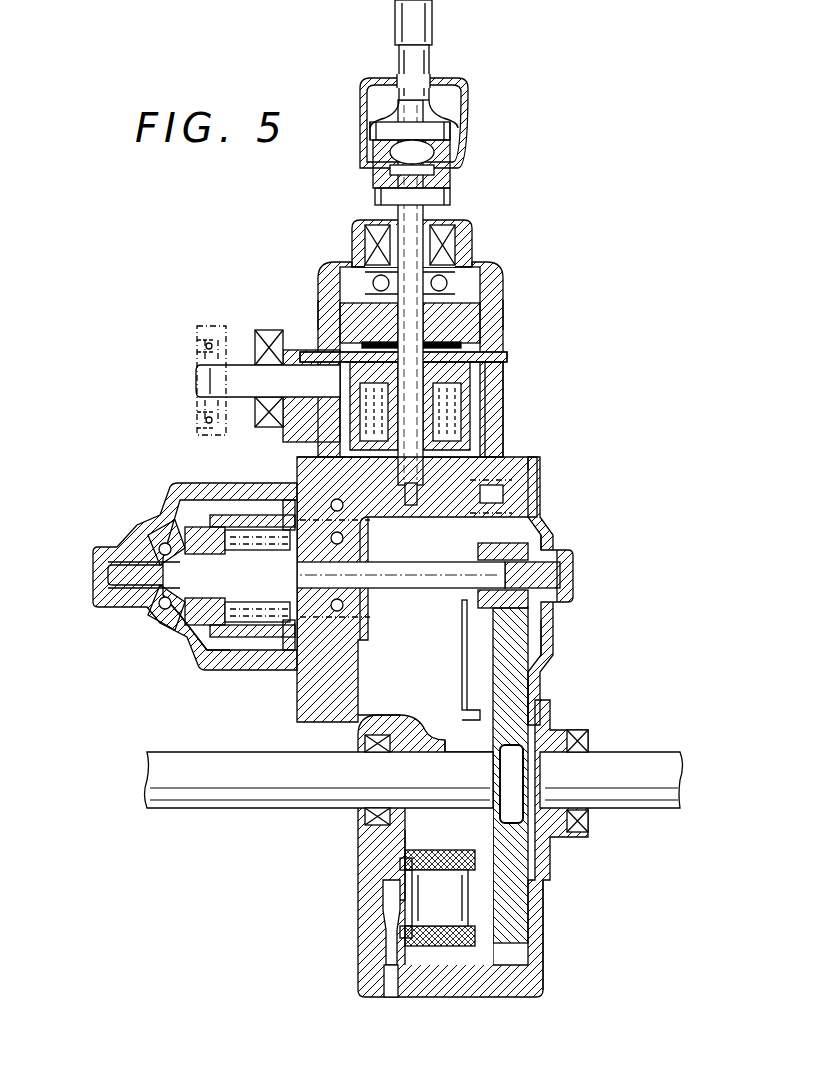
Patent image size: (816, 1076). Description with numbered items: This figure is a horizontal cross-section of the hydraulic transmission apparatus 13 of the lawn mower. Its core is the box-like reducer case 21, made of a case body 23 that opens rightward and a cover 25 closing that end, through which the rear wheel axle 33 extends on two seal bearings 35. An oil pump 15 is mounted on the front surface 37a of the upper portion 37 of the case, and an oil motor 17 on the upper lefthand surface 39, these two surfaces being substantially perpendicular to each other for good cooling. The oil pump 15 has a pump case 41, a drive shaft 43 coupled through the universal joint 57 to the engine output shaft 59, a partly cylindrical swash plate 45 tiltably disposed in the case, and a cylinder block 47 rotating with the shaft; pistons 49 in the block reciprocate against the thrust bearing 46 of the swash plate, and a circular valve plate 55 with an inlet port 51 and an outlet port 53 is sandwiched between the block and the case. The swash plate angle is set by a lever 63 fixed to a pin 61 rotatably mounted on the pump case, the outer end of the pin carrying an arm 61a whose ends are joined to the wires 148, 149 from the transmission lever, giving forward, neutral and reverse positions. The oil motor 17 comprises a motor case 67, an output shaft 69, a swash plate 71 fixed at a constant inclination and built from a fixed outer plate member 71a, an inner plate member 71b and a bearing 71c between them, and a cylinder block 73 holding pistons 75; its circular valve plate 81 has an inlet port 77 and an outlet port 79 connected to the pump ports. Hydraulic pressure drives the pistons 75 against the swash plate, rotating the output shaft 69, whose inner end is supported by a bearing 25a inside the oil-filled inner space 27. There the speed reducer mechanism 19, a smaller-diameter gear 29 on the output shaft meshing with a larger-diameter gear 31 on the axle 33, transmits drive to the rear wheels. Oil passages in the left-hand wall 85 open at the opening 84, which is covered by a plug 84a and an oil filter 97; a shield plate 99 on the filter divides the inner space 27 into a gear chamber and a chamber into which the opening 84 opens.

The hydraulic transmission apparatus 13 is at (515, 280).
The oil pump 15 is at (506, 346).
The oil motor 17 is at (150, 627).
The speed reducer mechanism 19 is at (518, 670).
The reducer case 21 is at (370, 873).
The case body 23 is at (397, 843).
The cover 25 is at (540, 938).
The bearing 25a is at (553, 552).
The inner space 27 is at (342, 641).
The smaller-diameter gear 29 is at (542, 530).
The larger-diameter gear 31 is at (517, 642).
The axle 33 is at (197, 793).
The seal bearings 35 is at (367, 822).
The upper portion 37 is at (540, 455).
The front surface 37a is at (535, 468).
The upper lefthand surface 39 is at (296, 470).
The pump case 41 is at (504, 320).
The drive shaft 43 is at (415, 223).
The swash plate 45 is at (487, 310).
The thrust bearing 46 is at (473, 346).
The cylinder block 47 is at (473, 393).
The pistons 49 is at (330, 350).
The inlet port 51 is at (322, 455).
The outlet port 53 is at (512, 474).
The valve plate 55 is at (500, 432).
The universal joint 57 is at (470, 132).
The engine output shaft 59 is at (434, 26).
The pin 61 is at (245, 372).
The arm 61a is at (217, 326).
The lever 63 is at (325, 300).
The motor case 67 is at (183, 628).
The output shaft 69 is at (140, 575).
The swash plate 71 is at (130, 543).
The fixed outer plate member 71a is at (160, 540).
The inner plate member 71b is at (170, 525).
The bearing 71c is at (187, 622).
The cylinder block 73 is at (220, 515).
The pistons 75 is at (175, 505).
The inlet port 77 is at (287, 640).
The outlet port 79 is at (345, 528).
The valve plate 81 is at (293, 483).
The opening 84 is at (380, 885).
The plug 84a is at (392, 990).
The left-hand wall 85 is at (360, 715).
The oil filter 97 is at (442, 940).
The shield plate 99 is at (480, 850).
The wire 148 is at (205, 346).
The wire 149 is at (207, 418).